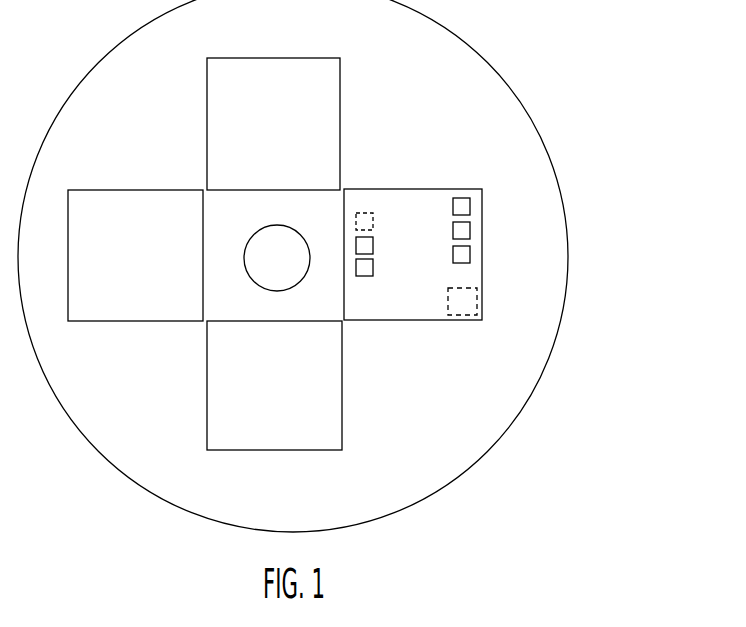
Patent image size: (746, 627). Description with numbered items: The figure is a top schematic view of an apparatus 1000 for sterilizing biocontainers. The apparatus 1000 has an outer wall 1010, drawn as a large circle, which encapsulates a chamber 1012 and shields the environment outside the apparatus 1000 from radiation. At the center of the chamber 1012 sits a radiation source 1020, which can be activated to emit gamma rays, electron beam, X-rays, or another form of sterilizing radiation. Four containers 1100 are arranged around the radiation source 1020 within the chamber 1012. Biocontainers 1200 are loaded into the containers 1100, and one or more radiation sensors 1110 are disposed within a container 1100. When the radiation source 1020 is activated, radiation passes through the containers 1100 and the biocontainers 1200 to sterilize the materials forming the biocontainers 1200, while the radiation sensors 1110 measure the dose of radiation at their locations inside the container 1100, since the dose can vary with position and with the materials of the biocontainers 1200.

The apparatus 1000 is at (346, 266).
The outer wall 1010 is at (571, 237).
The chamber 1012 is at (435, 113).
The radiation source 1020 is at (299, 271).
The container 1100 is at (205, 167).
The radiation sensor 1110 is at (358, 213).
The biocontainer 1200 is at (472, 207).